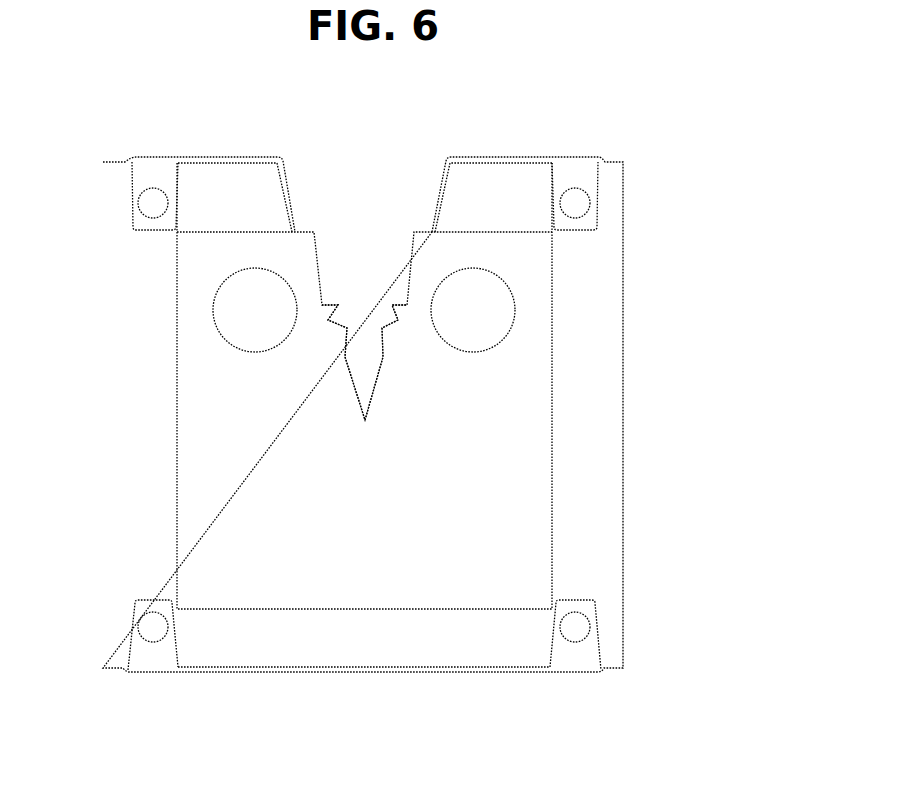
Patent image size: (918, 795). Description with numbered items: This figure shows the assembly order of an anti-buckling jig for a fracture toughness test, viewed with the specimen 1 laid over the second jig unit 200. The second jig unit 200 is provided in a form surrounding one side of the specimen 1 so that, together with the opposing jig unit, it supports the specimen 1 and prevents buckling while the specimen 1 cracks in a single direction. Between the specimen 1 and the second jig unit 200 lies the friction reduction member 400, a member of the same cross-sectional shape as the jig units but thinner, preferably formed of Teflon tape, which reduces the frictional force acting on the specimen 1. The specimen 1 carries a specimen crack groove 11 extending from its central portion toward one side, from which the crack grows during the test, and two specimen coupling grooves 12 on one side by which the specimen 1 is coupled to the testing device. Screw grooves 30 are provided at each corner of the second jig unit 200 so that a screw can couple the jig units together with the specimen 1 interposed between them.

The specimen 1 is at (537, 470).
The specimen crack groove 11 is at (358, 408).
The specimen coupling groove 12 is at (253, 312).
The screw groove 30 is at (154, 192).
The second jig unit 200 is at (564, 157).
The friction reduction member 400 is at (598, 352).